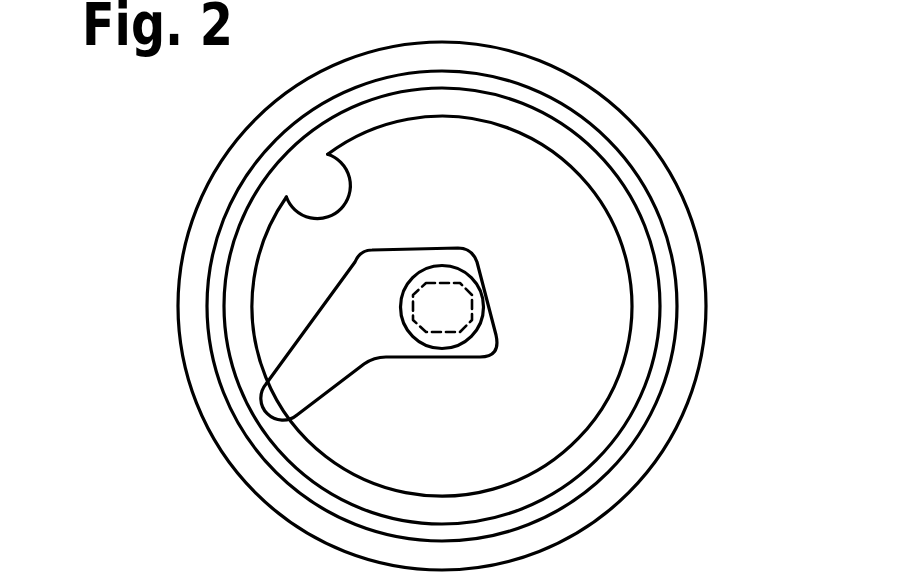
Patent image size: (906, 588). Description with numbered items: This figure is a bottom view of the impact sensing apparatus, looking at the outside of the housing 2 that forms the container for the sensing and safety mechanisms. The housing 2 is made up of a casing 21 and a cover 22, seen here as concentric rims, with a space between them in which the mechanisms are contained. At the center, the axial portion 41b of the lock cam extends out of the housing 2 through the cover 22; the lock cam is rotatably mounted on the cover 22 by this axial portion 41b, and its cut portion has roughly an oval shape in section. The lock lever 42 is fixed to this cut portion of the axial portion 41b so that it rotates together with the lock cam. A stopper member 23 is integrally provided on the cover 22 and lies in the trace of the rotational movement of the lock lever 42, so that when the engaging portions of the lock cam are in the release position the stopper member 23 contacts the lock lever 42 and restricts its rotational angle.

The housing 2 is at (236, 136).
The casing 21 is at (202, 222).
The cover 22 is at (263, 298).
The stopper member 23 is at (306, 191).
The lock lever 42 is at (277, 385).
The axial portion 41b is at (457, 305).